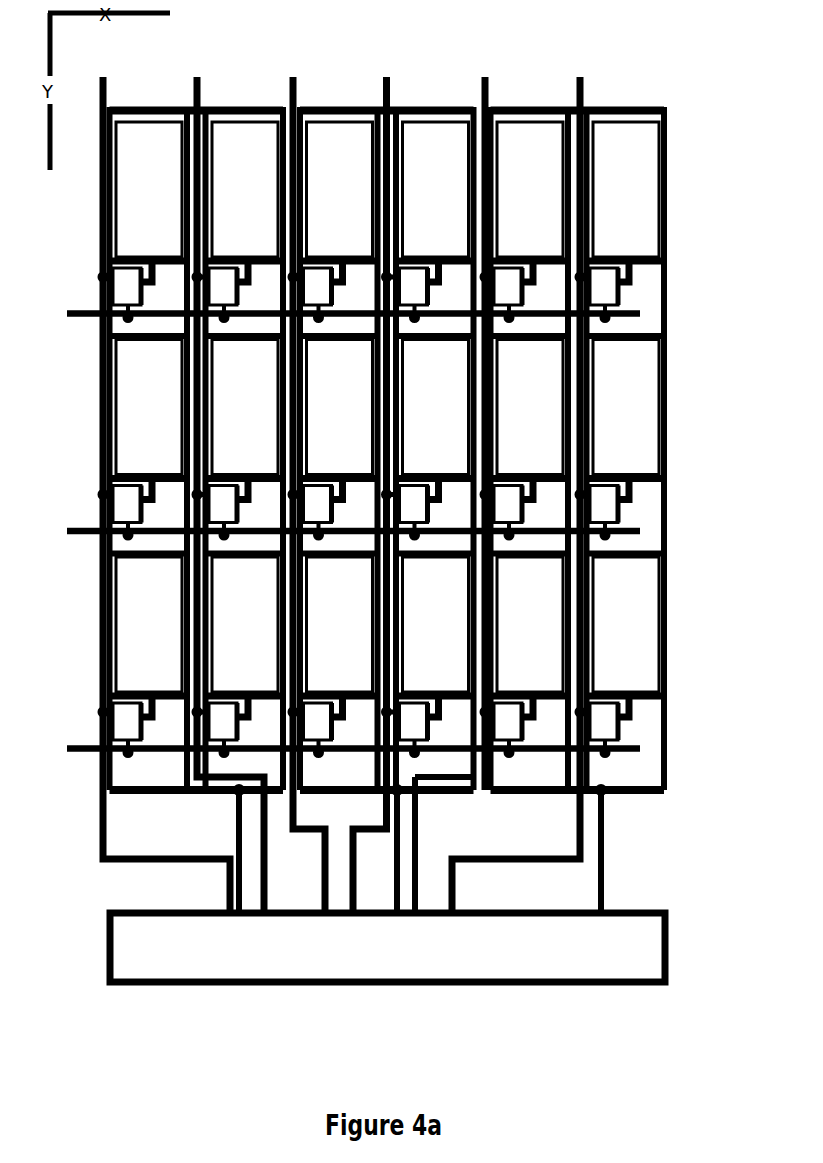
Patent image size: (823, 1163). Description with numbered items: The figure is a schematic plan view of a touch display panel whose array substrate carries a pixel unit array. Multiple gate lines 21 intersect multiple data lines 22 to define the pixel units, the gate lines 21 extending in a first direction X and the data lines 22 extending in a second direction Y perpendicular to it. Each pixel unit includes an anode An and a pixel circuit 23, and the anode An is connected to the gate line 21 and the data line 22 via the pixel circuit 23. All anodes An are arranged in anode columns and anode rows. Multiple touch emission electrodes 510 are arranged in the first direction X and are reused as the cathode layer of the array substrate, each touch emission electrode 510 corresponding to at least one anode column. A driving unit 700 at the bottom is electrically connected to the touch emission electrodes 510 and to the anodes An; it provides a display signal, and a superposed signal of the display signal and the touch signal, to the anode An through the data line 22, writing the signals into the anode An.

The gate line 21 is at (640, 313).
The data line 22 is at (295, 95).
The pixel circuit 23 is at (103, 495).
The touch emission electrode 510 is at (397, 106).
The anode An is at (148, 433).
The driving unit 700 is at (618, 962).